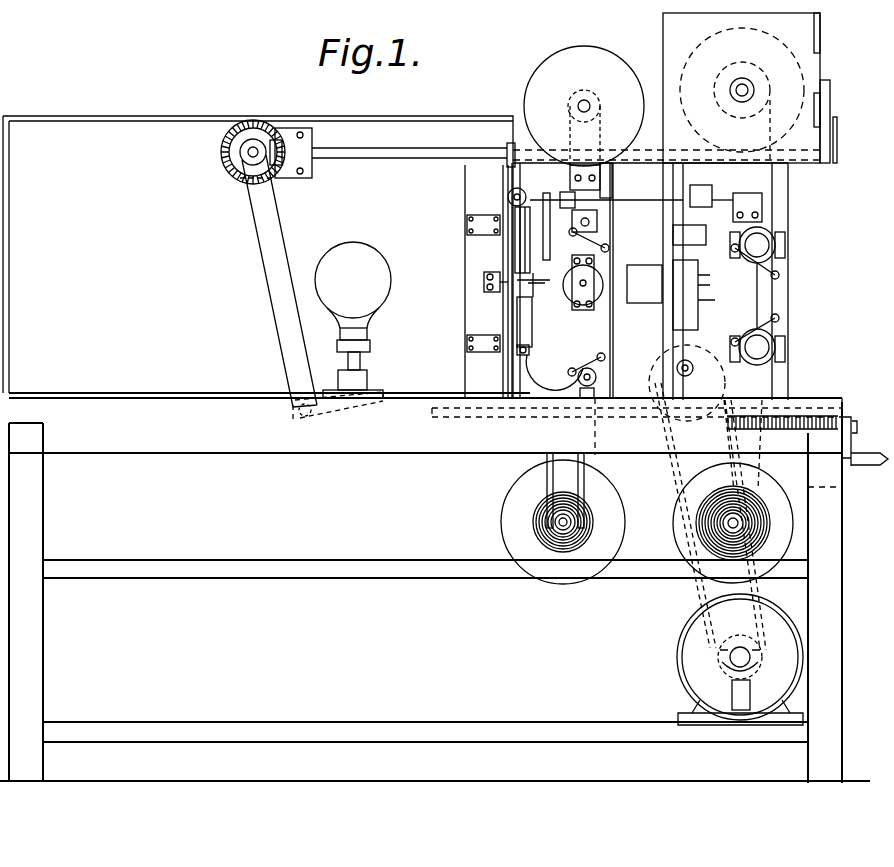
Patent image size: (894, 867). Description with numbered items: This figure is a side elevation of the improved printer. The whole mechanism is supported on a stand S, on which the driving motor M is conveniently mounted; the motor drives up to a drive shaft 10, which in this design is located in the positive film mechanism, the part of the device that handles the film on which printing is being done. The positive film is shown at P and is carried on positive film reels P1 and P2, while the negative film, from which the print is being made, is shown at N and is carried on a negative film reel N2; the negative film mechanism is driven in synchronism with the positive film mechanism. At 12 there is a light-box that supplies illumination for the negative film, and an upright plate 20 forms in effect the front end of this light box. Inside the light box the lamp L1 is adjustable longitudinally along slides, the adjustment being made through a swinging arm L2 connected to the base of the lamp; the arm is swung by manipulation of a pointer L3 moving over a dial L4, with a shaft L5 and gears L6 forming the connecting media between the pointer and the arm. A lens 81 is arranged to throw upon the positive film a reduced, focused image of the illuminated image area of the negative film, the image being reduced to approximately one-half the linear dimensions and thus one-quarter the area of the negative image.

The light-box 12 is at (388, 113).
The shaft L5 is at (413, 150).
The gears L6 is at (262, 128).
The swinging arm L2 is at (282, 250).
The stand S is at (305, 434).
The lamp L1 is at (366, 305).
The upright plate 20 is at (512, 178).
The negative film reel N2 is at (550, 68).
The negative film N is at (552, 362).
The positive film reel P2 is at (790, 76).
The dial L4 is at (830, 100).
The pointer L3 is at (838, 136).
The positive film P is at (772, 480).
The positive film reel P1 is at (705, 535).
The lens 81 is at (644, 284).
The drive shaft 10 is at (678, 372).
The driving motor M is at (694, 657).